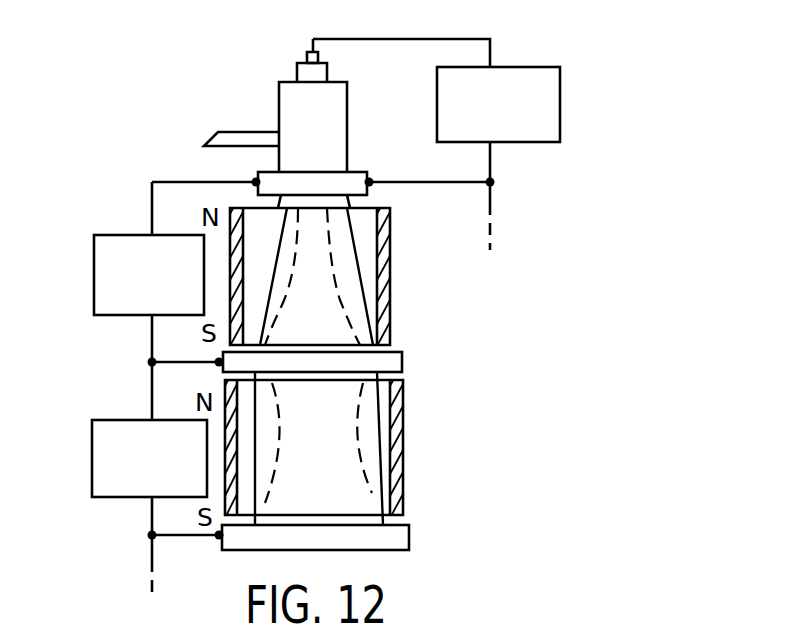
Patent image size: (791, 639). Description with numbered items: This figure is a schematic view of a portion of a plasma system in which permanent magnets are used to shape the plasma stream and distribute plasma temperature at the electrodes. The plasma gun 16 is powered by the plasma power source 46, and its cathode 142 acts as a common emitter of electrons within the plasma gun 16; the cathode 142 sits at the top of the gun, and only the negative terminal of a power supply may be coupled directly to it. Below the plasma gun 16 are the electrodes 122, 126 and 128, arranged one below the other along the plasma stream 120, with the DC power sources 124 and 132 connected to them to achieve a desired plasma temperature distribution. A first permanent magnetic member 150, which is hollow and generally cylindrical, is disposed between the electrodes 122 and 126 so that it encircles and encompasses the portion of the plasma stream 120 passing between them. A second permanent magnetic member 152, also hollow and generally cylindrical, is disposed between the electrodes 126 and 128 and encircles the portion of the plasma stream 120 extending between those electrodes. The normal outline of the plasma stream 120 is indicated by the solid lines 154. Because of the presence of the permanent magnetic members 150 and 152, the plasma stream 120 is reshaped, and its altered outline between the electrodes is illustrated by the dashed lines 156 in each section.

The plasma gun 16 is at (347, 122).
The plasma power source 46 is at (560, 118).
The plasma stream 120 is at (333, 281).
The electrode 122 is at (367, 190).
The DC power source 124 is at (94, 260).
The electrode 126 is at (402, 365).
The electrode 128 is at (409, 535).
The DC power source 132 is at (92, 453).
The cathode 142 is at (318, 72).
The first permanent magnetic member 150 is at (390, 336).
The permanent magnetic member 152 is at (403, 497).
The solid lines 154 is at (357, 253).
The dashed lines 156 is at (343, 307).